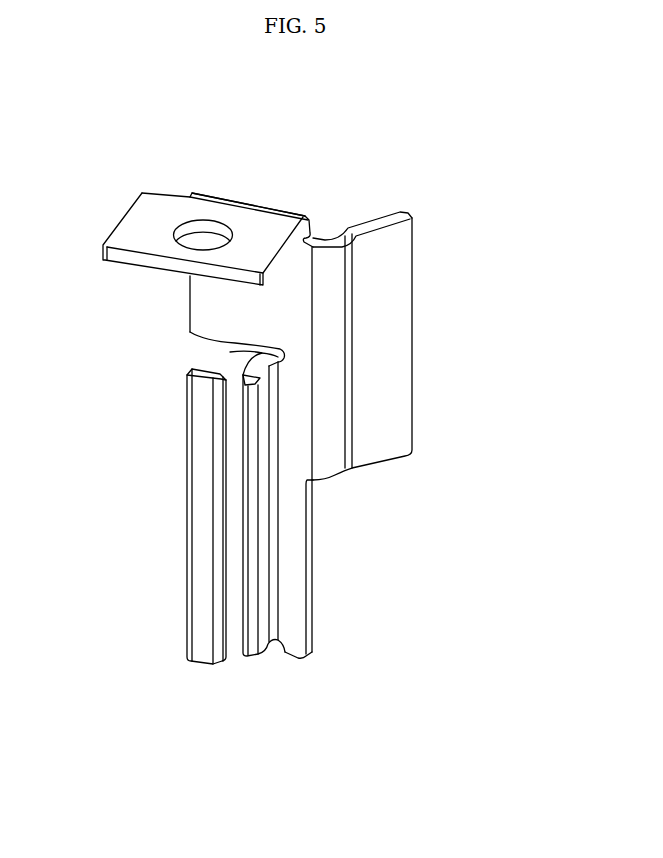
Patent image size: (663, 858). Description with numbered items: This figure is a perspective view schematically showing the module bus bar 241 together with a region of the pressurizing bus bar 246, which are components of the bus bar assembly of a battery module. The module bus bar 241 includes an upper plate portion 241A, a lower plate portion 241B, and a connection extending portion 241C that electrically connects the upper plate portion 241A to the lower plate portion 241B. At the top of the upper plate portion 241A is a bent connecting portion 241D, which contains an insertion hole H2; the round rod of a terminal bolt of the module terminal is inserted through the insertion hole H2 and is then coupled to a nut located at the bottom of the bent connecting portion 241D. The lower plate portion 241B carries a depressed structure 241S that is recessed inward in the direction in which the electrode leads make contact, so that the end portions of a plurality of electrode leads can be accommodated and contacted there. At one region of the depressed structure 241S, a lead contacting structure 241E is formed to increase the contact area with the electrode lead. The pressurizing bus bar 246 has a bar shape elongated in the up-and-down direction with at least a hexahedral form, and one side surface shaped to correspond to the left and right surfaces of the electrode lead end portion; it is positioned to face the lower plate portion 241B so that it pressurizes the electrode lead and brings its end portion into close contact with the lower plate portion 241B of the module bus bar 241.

The module bus bar 241 is at (118, 143).
The insertion hole H2 is at (208, 230).
The bent connecting portion 241D is at (262, 232).
The upper plate portion 241A is at (215, 313).
The depressed structure 241S is at (230, 352).
The connection extending portion 241C is at (385, 320).
The lower plate portion 241B is at (283, 494).
The pressurizing bus bar 246 is at (187, 502).
The lead contacting structure 241E is at (243, 565).